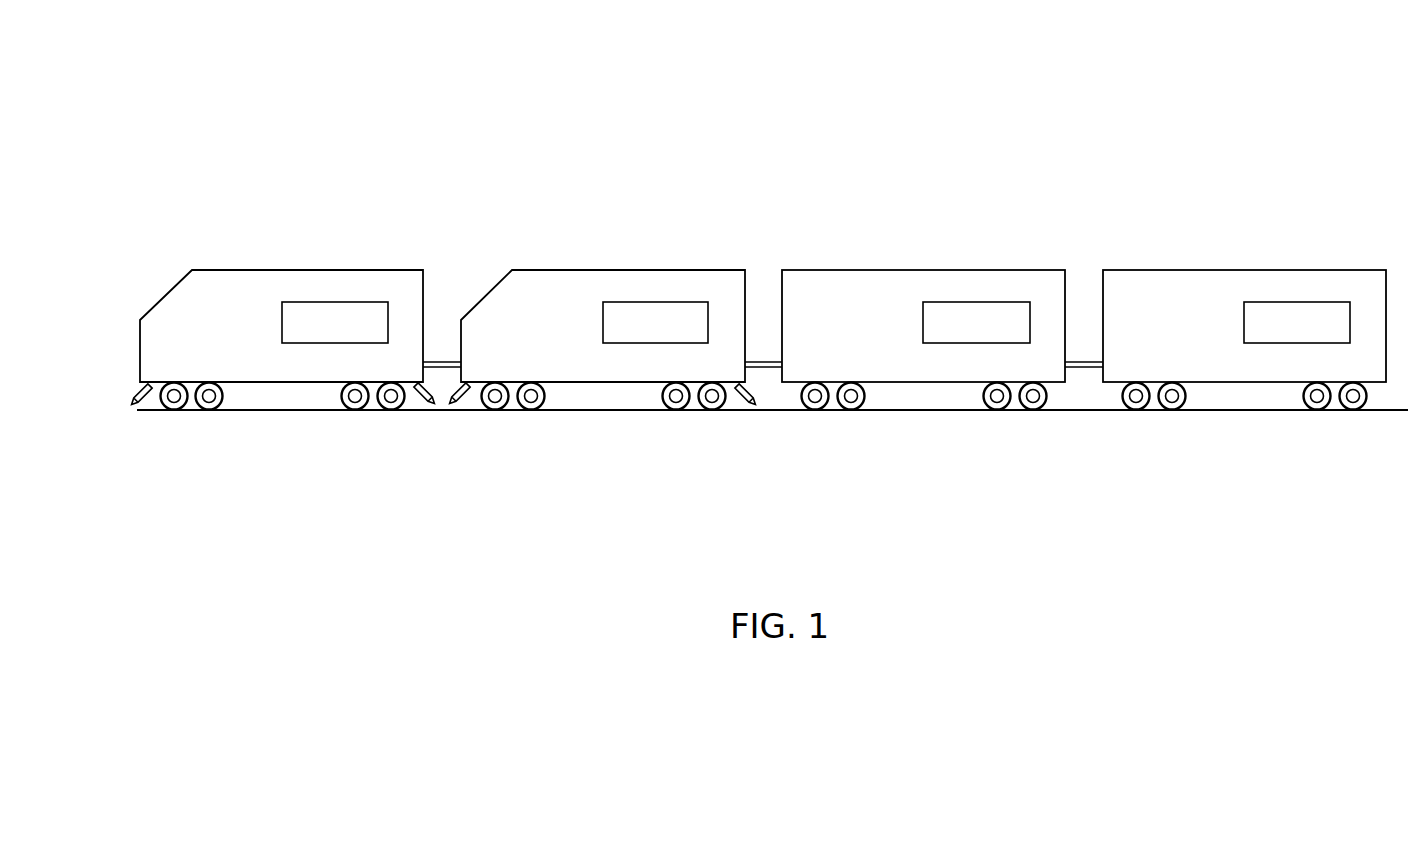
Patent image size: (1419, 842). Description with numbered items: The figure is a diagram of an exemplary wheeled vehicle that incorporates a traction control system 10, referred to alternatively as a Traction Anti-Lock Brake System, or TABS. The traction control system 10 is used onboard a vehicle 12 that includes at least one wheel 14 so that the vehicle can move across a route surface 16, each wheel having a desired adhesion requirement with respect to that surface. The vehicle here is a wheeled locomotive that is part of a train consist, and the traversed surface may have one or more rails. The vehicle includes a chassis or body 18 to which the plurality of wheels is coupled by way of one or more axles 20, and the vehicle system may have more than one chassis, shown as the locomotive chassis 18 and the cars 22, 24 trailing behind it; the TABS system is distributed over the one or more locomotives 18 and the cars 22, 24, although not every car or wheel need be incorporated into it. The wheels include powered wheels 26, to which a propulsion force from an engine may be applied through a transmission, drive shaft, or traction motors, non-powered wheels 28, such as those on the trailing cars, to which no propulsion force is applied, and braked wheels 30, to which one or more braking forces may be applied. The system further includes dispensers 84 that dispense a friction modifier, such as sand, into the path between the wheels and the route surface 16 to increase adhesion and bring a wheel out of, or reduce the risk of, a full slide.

The traction control system 10 is at (1049, 94).
The vehicle 12 is at (165, 293).
The wheel 14 is at (190, 434).
The route surface 16 is at (1250, 410).
The chassis/body 18 is at (308, 270).
The axle 20 is at (346, 410).
The car 22 is at (922, 270).
The car 24 is at (1243, 270).
The powered wheel 26 is at (152, 407).
The non-powered wheel 28 is at (801, 410).
The braked wheel 30 is at (400, 410).
The dispenser 84 is at (136, 392).